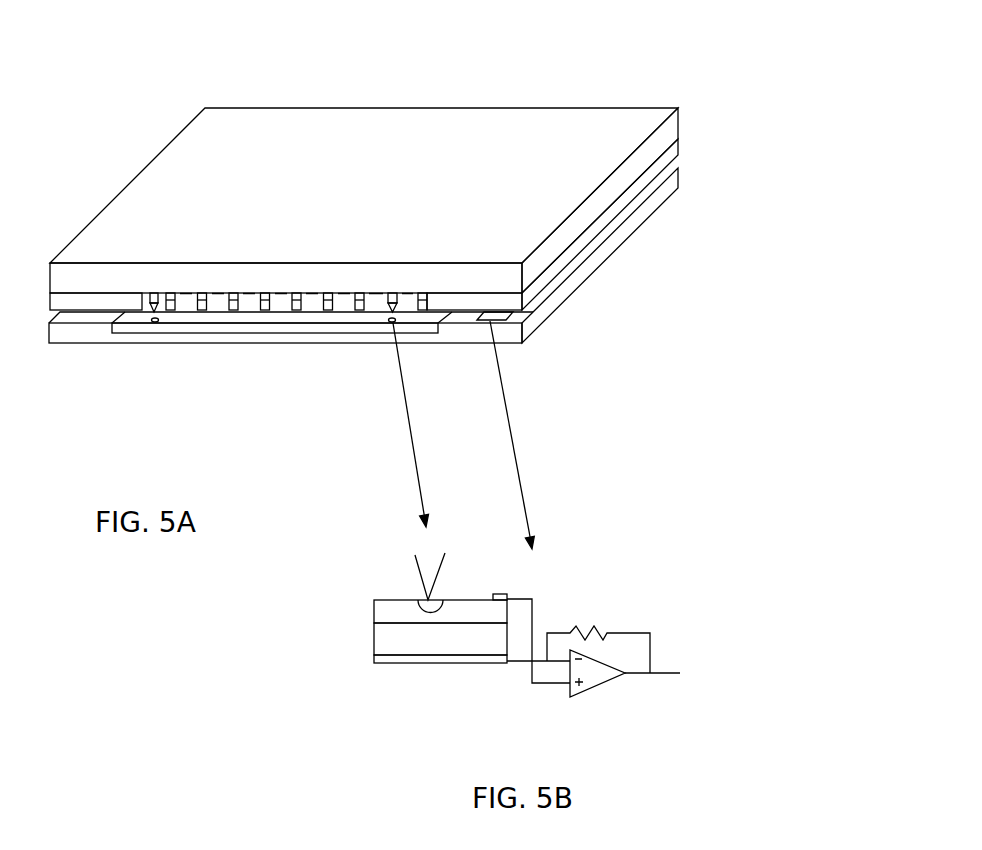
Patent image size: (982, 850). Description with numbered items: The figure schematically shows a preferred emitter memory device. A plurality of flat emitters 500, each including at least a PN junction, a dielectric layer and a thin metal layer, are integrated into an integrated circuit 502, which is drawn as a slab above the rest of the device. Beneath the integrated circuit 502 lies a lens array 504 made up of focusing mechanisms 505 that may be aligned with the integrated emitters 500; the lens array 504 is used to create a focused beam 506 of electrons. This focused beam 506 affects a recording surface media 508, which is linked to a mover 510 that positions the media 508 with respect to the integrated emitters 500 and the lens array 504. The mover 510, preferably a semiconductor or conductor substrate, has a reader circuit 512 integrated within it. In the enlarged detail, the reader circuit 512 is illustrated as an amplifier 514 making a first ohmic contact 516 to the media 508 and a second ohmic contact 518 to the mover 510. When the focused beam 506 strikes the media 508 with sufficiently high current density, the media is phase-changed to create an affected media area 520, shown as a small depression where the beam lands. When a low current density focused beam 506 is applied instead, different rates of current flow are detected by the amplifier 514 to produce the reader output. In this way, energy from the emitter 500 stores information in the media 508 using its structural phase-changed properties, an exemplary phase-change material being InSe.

In FIG. 5A, the flat emitters 500 is at (187, 293).
In FIG. 5A, the integrated circuit 502 is at (533, 127).
In FIG. 5A, the lens array 504 is at (679, 148).
In FIG. 5A, the focusing mechanisms 505 is at (447, 295).
In FIG. 5A, the focused beam 506 is at (160, 318).
In FIG. 5B, the focused beam 506 is at (408, 570).
In FIG. 5A, the recording surface media 508 is at (290, 322).
In FIG. 5B, the recording surface media 508 is at (374, 615).
In FIG. 5A, the mover 510 is at (679, 189).
In FIG. 5B, the mover 510 is at (374, 647).
In FIG. 5A, the reader circuit 512 is at (508, 316).
In FIG. 5B, the reader circuit 512 is at (538, 580).
In FIG. 5B, the amplifier 514 is at (606, 710).
In FIG. 5B, the first ohmic contact 516 is at (498, 593).
In FIG. 5B, the second ohmic contact 518 is at (493, 665).
In FIG. 5A, the affected media area 520 is at (150, 320).
In FIG. 5B, the affected media area 520 is at (427, 597).